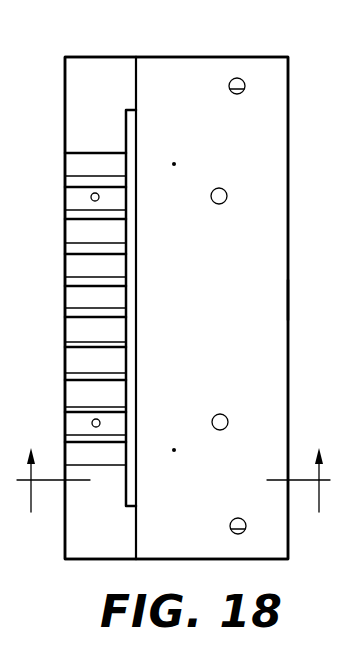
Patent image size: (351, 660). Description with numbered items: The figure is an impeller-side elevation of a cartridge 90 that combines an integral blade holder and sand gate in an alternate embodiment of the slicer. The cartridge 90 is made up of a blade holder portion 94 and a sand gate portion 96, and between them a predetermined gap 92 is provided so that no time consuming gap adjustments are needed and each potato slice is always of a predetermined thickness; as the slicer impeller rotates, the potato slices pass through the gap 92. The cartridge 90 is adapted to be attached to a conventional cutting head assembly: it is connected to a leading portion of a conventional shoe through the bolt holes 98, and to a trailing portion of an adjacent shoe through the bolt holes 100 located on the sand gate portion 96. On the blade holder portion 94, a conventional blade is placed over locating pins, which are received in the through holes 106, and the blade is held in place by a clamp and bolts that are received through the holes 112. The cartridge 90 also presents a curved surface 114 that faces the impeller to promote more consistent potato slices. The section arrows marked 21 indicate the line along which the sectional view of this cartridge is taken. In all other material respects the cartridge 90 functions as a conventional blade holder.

The cartridge 90 is at (240, 52).
The gap 92 is at (120, 297).
The blade holder portion 94 is at (160, 57).
The sand gate portion 96 is at (103, 68).
The bolt holes 98 is at (245, 86).
The bolt holes 100 is at (91, 197).
The through holes 106 is at (174, 164).
The holes 112 is at (214, 203).
The curved surface 114 is at (268, 305).
The section line 21- 21 is at (175, 465).